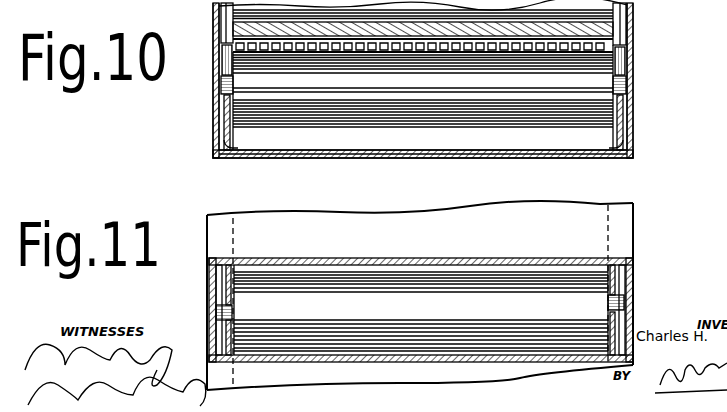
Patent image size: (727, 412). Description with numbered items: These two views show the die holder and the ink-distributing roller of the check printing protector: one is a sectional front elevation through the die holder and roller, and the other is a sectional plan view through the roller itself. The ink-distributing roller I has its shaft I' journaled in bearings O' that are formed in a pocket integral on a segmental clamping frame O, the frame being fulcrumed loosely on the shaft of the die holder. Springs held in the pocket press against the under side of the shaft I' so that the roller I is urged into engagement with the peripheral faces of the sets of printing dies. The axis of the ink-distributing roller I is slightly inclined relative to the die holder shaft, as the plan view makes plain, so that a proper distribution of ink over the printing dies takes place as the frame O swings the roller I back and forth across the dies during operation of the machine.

In FIG. 10, the segmental clamping frame O is at (435, 79).
In FIG. 11, the segmental clamping frame O is at (421, 310).
In FIG. 10, the bearings O' is at (421, 60).
In FIG. 11, the bearings O' is at (422, 310).
In FIG. 10, the ink-distributing roller I is at (423, 97).
In FIG. 11, the ink-distributing roller I is at (421, 295).
In FIG. 10, the shaft I' is at (419, 84).
In FIG. 11, the shaft I' is at (419, 310).